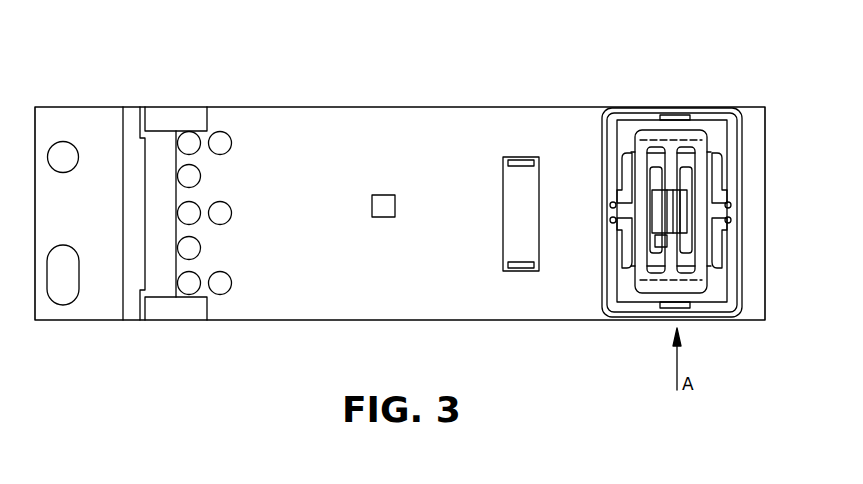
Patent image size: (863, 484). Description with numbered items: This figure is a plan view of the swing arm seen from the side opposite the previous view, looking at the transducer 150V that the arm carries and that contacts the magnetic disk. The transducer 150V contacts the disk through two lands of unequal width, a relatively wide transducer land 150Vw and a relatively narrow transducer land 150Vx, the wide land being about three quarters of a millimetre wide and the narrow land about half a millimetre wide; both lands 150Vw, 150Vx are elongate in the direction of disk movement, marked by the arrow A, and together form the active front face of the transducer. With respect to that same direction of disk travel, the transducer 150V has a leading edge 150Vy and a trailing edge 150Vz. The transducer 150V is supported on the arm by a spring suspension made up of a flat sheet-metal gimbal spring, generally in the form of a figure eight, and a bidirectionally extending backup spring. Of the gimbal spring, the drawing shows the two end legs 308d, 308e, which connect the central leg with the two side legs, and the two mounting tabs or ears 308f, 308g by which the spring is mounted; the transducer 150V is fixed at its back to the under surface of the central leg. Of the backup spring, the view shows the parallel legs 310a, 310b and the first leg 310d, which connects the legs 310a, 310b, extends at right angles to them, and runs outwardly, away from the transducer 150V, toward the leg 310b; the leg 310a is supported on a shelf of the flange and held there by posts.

The transducer 150V is at (673, 190).
The wide transducer land 150Vw is at (660, 223).
The narrow transducer land 150Vx is at (682, 222).
The leading edge 150Vy is at (658, 237).
The trailing edge 150Vz is at (663, 190).
The end leg 308d is at (655, 287).
The end leg 308e is at (698, 133).
The mounting tab 308f is at (631, 205).
The mounting tab 308g is at (715, 200).
The leg of backup spring 310a is at (623, 170).
The leg of backup spring 310b is at (717, 238).
The first leg 310d is at (712, 282).